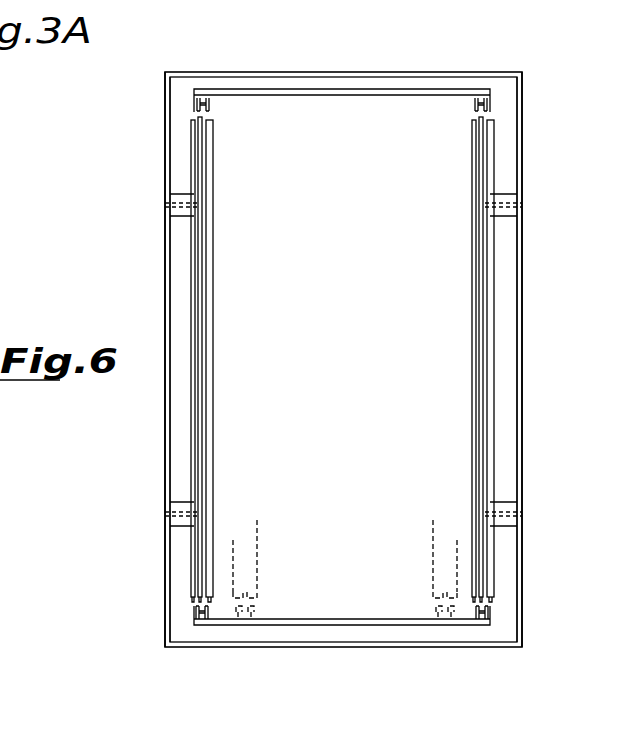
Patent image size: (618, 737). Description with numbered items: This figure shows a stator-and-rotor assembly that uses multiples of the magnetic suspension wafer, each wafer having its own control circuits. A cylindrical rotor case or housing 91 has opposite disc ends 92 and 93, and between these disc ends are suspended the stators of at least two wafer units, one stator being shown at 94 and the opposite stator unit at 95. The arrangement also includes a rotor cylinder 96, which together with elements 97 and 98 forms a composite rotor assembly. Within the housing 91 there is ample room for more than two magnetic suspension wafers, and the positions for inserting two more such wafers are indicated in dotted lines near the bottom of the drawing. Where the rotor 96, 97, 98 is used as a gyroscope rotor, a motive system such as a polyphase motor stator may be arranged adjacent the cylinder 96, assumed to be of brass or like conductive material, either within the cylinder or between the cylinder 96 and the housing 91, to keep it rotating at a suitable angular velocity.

The cylindrical rotor case or housing 91 is at (360, 71).
The disc end 92 is at (165, 126).
The disc end 93 is at (521, 150).
The stator 94 is at (212, 228).
The opposite stator unit 95 is at (472, 228).
The rotor cylinder 96 is at (441, 94).
The rotor assembly element 97 is at (210, 105).
The rotor assembly element 98 is at (474, 104).